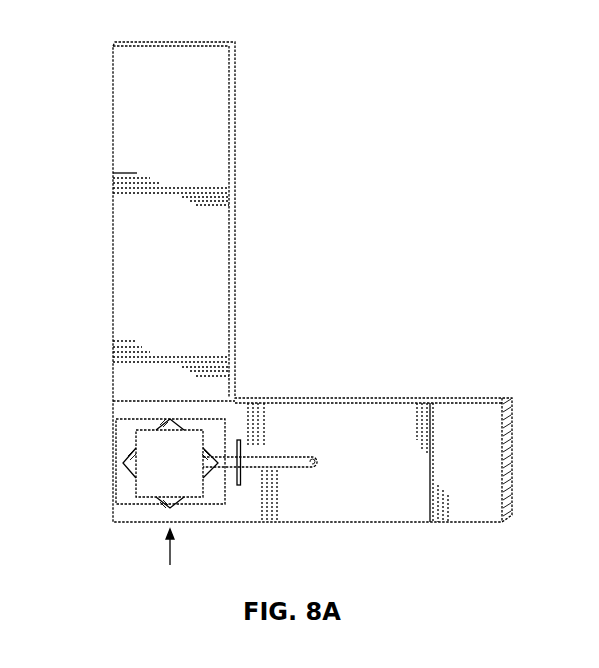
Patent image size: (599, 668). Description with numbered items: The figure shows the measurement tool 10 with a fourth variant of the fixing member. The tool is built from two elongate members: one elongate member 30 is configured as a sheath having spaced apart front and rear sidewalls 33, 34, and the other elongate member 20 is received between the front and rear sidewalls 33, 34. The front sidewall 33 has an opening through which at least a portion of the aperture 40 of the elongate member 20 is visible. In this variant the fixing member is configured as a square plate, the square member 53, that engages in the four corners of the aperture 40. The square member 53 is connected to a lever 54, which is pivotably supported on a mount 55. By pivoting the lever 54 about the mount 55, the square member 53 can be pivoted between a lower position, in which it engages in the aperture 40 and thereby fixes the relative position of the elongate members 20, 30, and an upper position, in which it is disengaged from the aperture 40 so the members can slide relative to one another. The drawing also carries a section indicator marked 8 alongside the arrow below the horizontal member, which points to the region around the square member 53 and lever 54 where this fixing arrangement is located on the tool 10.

The measurement tool 10 is at (128, 22).
The elongate member 20 is at (235, 202).
The elongate member 30 is at (325, 366).
The front sidewall 33 is at (357, 410).
The rear sidewall 34 is at (427, 398).
The aperture 40 is at (113, 468).
The square member 53 is at (165, 430).
The lever 54 is at (278, 486).
The mount 55 is at (238, 486).
The section line indicator 8 is at (165, 548).